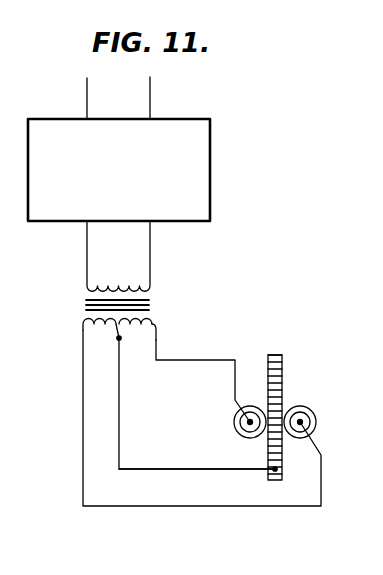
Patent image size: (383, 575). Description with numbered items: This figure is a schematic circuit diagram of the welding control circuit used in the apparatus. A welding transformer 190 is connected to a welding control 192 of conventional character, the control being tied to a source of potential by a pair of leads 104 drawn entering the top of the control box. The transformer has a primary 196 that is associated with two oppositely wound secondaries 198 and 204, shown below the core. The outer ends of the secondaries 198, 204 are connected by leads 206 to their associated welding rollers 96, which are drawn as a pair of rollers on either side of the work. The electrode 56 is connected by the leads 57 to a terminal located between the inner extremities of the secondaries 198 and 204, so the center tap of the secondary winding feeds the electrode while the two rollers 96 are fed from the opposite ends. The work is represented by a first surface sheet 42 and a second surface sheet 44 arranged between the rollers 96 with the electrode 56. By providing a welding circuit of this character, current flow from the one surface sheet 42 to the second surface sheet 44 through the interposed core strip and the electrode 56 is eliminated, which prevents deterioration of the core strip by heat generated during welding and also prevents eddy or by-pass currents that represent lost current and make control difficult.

The power supply leads 104 is at (87, 91).
The welding control 192 is at (198, 201).
The welding transformer 190 is at (80, 304).
The primary 196 is at (86, 289).
The secondary 198 is at (92, 327).
The secondary 204 is at (158, 333).
The leads 206 is at (117, 339).
The leads 57 is at (180, 470).
The second surface sheet 44 is at (285, 386).
The surface sheet 42 is at (268, 360).
The electrode 56 is at (280, 359).
The welding rollers 96 is at (318, 422).